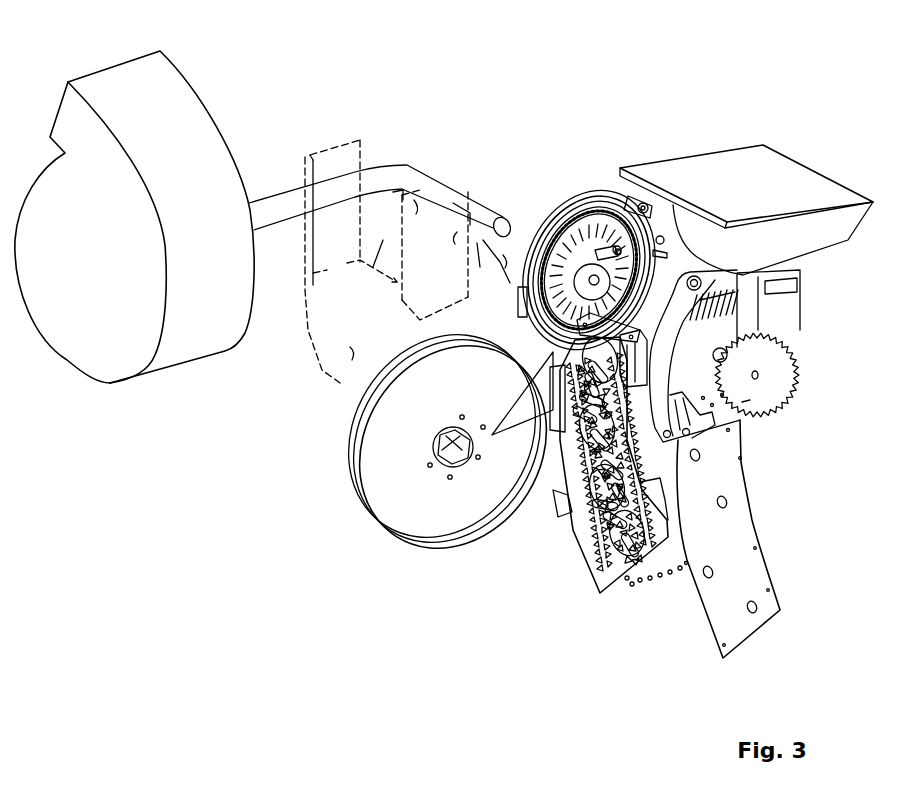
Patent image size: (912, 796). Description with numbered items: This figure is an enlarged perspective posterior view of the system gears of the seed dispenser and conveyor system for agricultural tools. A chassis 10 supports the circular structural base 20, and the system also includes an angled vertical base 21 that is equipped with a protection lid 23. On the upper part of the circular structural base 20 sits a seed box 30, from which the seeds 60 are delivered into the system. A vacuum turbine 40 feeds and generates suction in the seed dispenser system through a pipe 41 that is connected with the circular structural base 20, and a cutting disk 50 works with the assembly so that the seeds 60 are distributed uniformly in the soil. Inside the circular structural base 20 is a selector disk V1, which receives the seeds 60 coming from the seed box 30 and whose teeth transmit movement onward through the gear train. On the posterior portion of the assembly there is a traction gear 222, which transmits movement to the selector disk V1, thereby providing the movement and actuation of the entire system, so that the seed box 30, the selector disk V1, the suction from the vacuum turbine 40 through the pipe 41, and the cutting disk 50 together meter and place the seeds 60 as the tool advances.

The chassis 10 is at (357, 140).
The circular structural base 20 is at (602, 195).
The angled vertical base 21 is at (547, 480).
The protection lid 23 is at (745, 533).
The seed box 30 is at (745, 163).
The vacuum turbine 40 is at (108, 355).
The pipe 41 is at (278, 205).
The cutting disk 50 is at (387, 519).
The seeds 60 is at (650, 582).
The traction gear 222 is at (776, 378).
The selector disk V1 is at (572, 260).